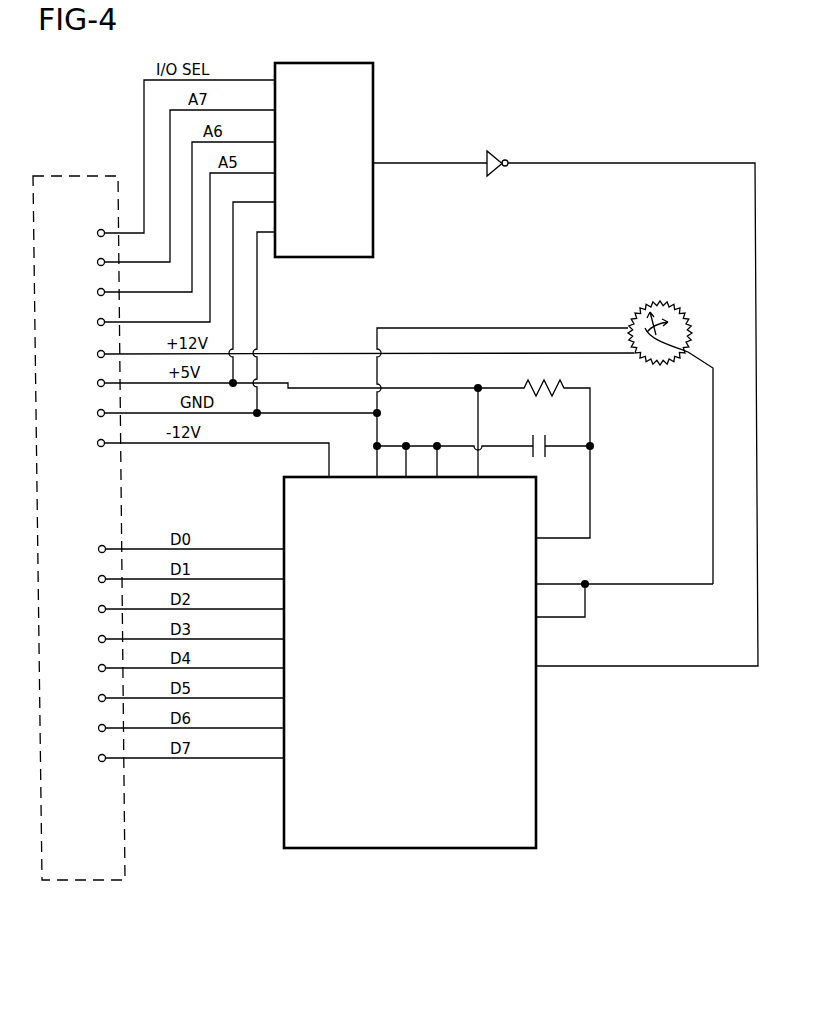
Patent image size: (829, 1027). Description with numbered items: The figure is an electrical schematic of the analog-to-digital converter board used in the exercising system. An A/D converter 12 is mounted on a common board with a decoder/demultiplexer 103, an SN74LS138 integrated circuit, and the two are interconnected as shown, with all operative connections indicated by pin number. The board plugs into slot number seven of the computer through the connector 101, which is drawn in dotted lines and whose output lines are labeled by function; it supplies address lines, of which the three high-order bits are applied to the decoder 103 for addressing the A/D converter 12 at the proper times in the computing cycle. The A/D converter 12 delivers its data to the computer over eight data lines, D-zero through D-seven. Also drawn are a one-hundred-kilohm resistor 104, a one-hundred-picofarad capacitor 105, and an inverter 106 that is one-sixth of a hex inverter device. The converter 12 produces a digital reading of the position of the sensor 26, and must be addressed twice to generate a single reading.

The A/D converter 12 is at (414, 623).
The sensor 26 is at (670, 302).
The connector for computer slot #7 101 is at (90, 881).
The decoder/demultiplexer 103 is at (348, 130).
The resistor 104 is at (549, 376).
The capacitor 105 is at (539, 435).
The inverter 106 is at (496, 157).